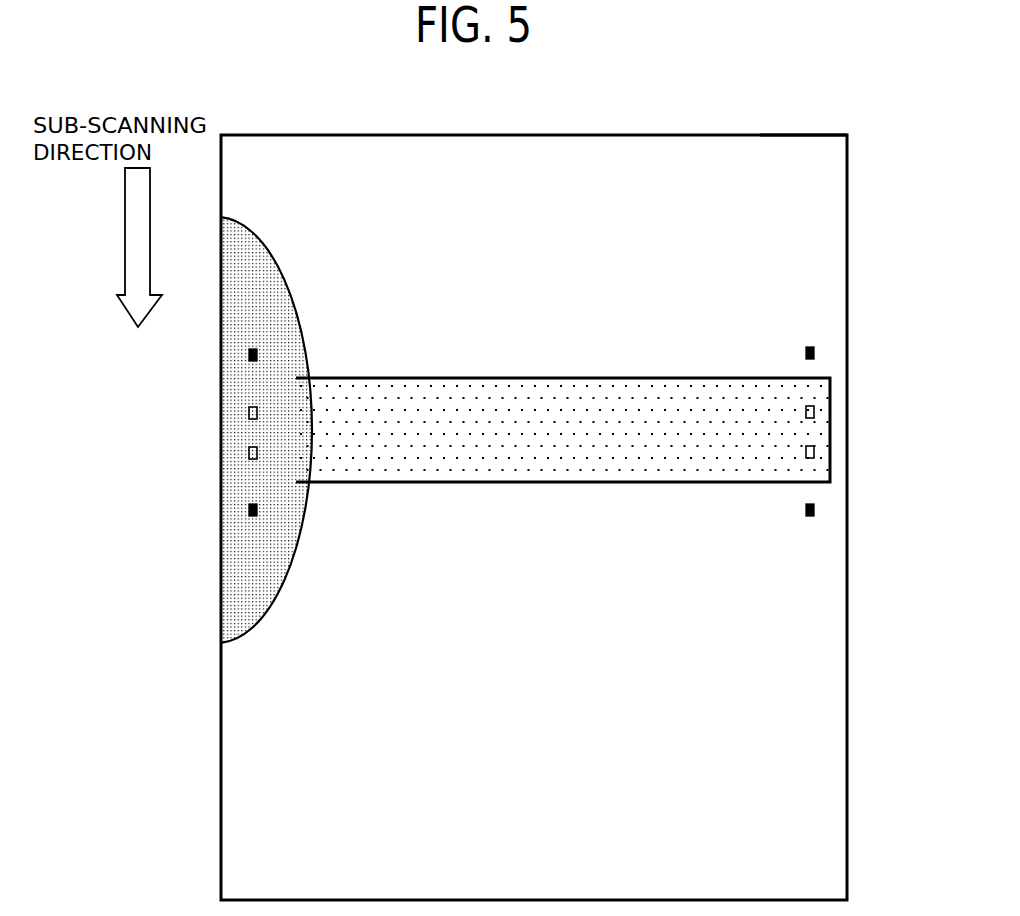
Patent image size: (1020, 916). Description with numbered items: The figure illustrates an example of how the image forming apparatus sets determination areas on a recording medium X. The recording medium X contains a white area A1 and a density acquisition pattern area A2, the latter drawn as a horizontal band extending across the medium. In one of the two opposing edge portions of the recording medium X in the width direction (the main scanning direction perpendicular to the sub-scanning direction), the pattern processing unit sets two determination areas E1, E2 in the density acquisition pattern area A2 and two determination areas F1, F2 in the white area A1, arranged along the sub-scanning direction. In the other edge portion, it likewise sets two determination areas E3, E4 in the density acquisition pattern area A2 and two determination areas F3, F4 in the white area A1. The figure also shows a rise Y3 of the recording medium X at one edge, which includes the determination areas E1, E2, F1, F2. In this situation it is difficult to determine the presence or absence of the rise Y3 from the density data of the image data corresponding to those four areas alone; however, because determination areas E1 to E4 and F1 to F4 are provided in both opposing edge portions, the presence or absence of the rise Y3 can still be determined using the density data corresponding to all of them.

The white area A1 is at (723, 576).
The density acquisition pattern area A2 is at (727, 425).
The recording medium X is at (806, 112).
The rise Y3 is at (260, 563).
The determination area F1 is at (247, 352).
The determination area F2 is at (247, 510).
The determination area F3 is at (818, 353).
The determination area F4 is at (818, 510).
The determination area E1 is at (247, 413).
The determination area E2 is at (247, 453).
The determination area E3 is at (818, 412).
The determination area E4 is at (818, 452).